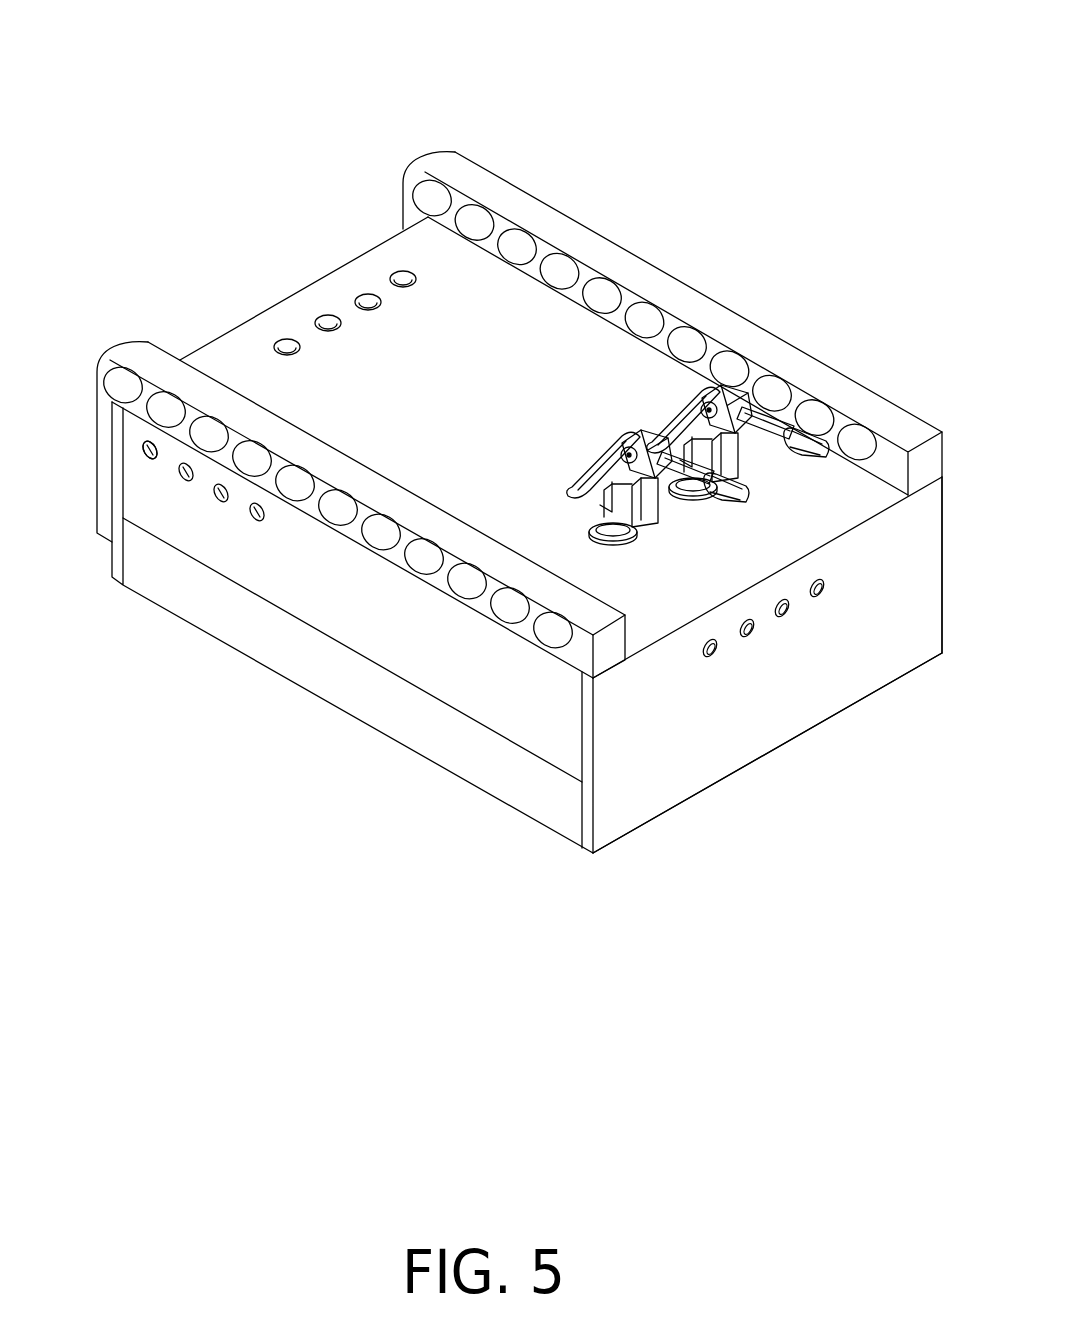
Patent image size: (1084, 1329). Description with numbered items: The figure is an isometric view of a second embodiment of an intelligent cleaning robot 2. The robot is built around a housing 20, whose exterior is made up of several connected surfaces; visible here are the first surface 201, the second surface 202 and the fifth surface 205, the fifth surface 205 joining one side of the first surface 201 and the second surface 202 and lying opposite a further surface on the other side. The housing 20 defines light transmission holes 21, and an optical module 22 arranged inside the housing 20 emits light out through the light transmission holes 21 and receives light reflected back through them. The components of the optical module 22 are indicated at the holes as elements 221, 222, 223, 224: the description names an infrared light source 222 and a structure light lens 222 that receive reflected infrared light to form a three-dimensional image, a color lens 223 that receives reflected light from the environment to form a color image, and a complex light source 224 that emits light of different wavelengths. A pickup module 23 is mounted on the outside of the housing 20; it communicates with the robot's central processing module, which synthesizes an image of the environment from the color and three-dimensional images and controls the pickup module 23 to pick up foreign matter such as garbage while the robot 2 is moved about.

The intelligent cleaning robot 2 is at (498, 66).
The housing 20 is at (607, 360).
The first surface 201 is at (412, 268).
The second surface 202 is at (547, 720).
The fifth surface 205 is at (663, 783).
The light transmission holes 21 is at (145, 446).
The optical module 22 is at (343, 762).
The first fastener 221 is at (153, 454).
The infrared light source 222 is at (186, 476).
The color lens 223 is at (222, 497).
The complex light source 224 is at (259, 515).
The pickup module 23 is at (745, 363).